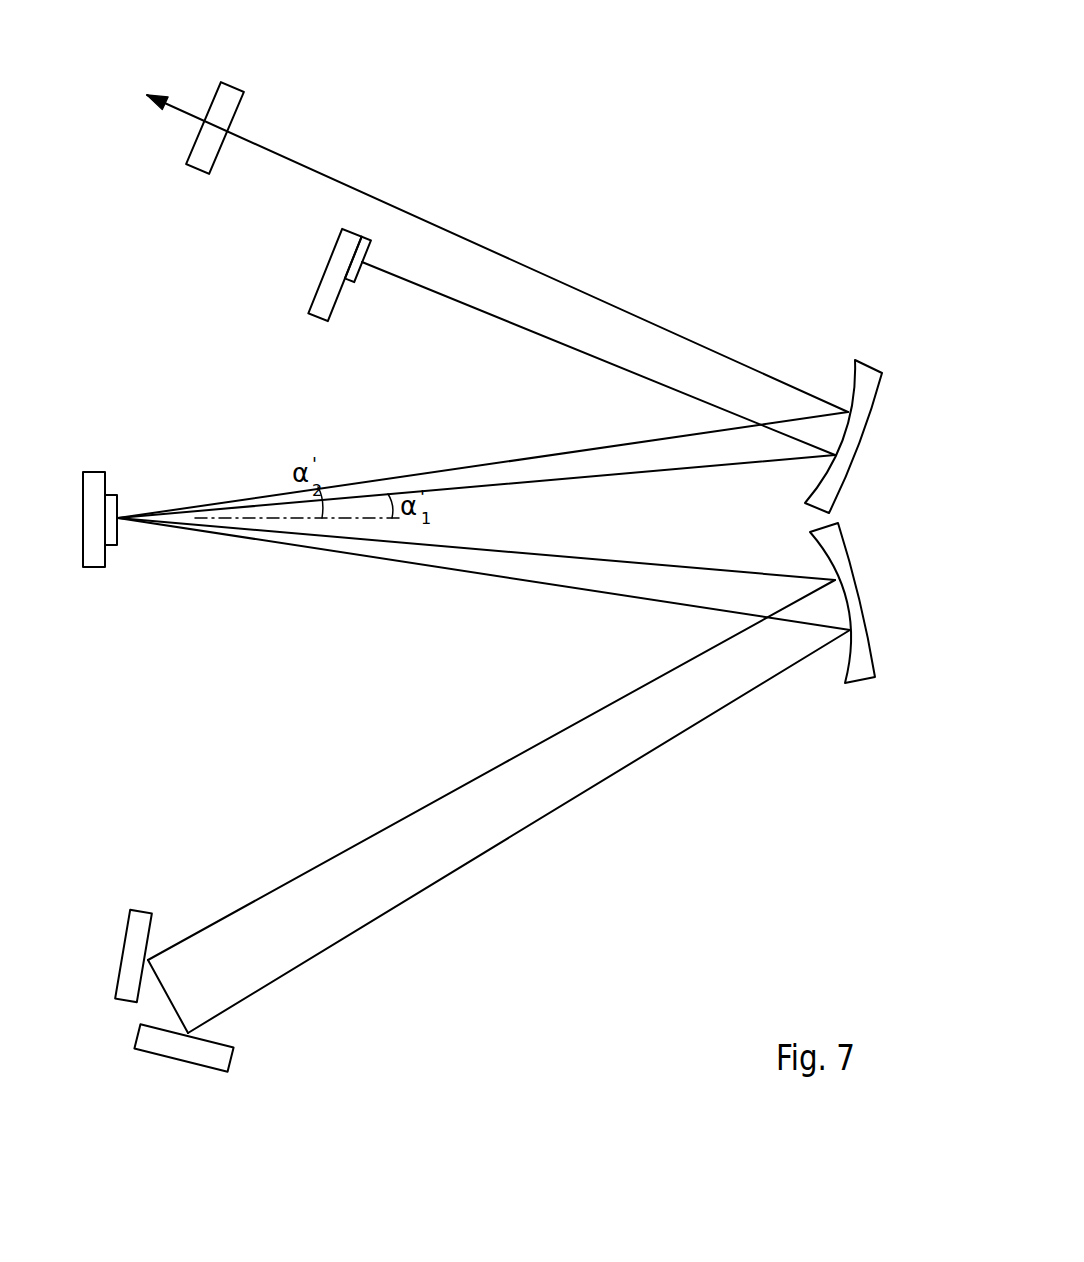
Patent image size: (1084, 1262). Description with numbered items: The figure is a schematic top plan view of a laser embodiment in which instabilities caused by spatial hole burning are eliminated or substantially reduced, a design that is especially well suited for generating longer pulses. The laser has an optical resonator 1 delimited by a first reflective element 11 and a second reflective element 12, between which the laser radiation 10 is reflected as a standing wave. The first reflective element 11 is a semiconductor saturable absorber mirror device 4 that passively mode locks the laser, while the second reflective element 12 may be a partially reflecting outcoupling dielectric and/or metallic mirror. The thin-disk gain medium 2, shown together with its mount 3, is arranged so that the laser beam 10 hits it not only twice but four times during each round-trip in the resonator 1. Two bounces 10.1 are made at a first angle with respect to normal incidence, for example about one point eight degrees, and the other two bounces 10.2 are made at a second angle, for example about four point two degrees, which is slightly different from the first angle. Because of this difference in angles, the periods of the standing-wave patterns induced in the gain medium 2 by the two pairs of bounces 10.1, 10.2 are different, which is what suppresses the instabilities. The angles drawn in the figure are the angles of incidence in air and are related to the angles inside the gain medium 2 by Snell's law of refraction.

The optical resonator 1 is at (617, 256).
The thin-disk gain medium 2 is at (116, 512).
The light source housing / mount 3 is at (100, 477).
The semiconductor saturable absorber mirror (SESAM) device 4 is at (356, 276).
The laser radiation 10 is at (563, 808).
The bounces at first angle 10.1 is at (384, 547).
The bounces at second angle 10.2 is at (283, 548).
The first reflective element 11 is at (316, 258).
The second reflective element 12 is at (232, 86).